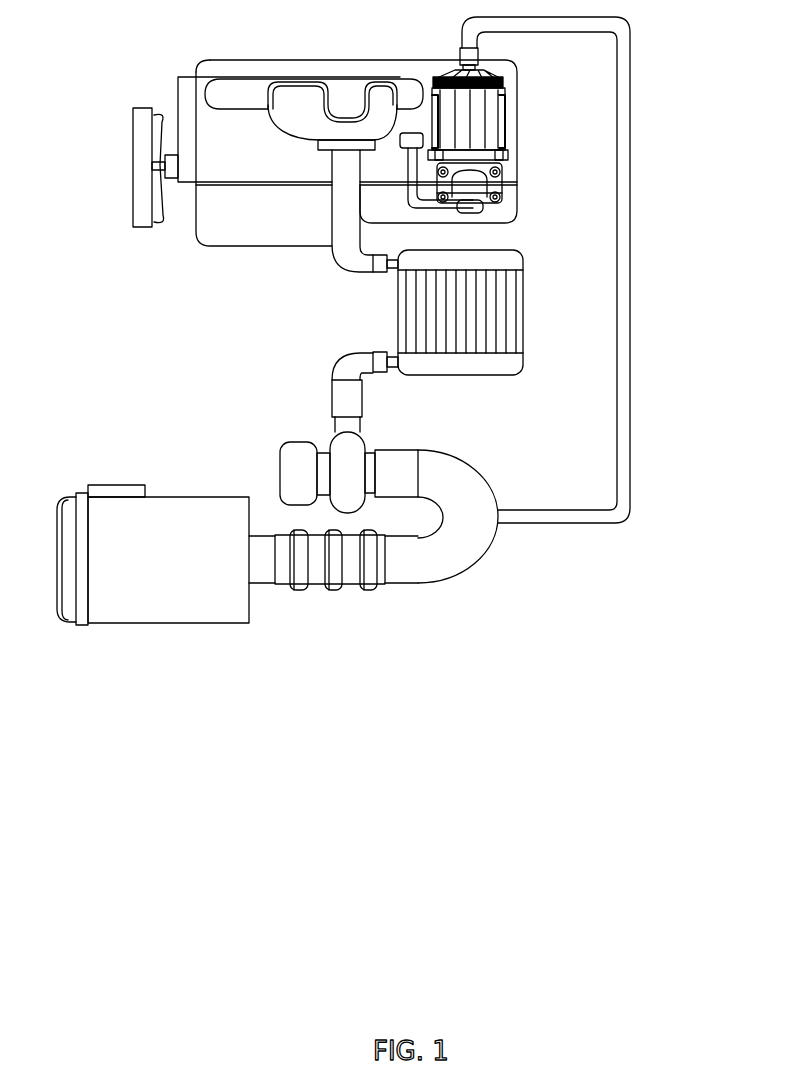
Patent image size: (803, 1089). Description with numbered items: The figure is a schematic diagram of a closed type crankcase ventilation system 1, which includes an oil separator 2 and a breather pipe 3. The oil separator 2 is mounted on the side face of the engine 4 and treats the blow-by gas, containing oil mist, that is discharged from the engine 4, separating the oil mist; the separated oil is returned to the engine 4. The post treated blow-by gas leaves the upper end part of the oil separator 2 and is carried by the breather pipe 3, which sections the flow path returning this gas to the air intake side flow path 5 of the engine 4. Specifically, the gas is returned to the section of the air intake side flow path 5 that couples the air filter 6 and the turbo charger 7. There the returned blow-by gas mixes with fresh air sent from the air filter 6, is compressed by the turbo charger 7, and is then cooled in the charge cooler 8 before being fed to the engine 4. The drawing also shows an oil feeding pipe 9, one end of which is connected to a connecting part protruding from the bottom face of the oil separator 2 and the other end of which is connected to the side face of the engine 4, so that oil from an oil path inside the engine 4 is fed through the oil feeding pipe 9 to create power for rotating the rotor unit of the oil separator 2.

The closed type crankcase ventilation system 1 is at (682, 52).
The oil separator 2 is at (505, 103).
The breather pipe 3 is at (630, 125).
The engine 4 is at (243, 62).
The air intake side flow path 5 is at (340, 257).
The air filter 6 is at (162, 623).
The turbo charger 7 is at (285, 465).
The charge cooler 8 is at (520, 367).
The oil feeding pipe 9 is at (462, 206).